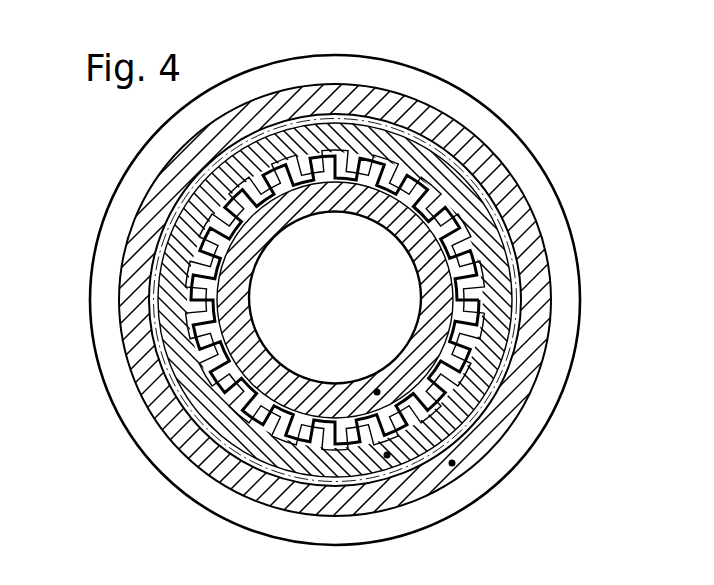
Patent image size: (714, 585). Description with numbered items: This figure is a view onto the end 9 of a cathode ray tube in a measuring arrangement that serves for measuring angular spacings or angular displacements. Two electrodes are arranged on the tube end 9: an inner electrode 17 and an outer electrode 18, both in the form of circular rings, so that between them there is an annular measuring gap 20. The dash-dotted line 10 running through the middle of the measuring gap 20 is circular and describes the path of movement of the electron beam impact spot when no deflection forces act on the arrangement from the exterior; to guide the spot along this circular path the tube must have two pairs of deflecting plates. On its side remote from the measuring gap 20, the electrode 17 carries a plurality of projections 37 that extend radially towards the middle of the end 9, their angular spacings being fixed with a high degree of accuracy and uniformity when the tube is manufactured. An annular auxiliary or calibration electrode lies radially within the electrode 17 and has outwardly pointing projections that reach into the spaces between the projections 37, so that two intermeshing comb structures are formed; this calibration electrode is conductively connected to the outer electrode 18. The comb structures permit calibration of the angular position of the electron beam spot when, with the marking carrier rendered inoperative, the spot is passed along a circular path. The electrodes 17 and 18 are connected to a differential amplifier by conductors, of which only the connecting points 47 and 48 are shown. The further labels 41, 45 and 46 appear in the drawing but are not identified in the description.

The end of the tube 9 is at (452, 108).
The dash-dotted line 10 is at (126, 300).
The electrode 17 is at (180, 367).
The outer electrode 18 is at (130, 337).
The measuring gap 20 is at (162, 245).
The projections 37 is at (313, 180).
The lamella strip 41 is at (455, 290).
The contact point 45 is at (377, 390).
The rotor body 46 is at (426, 279).
The connecting point 47 is at (388, 456).
The connecting point 48 is at (453, 464).